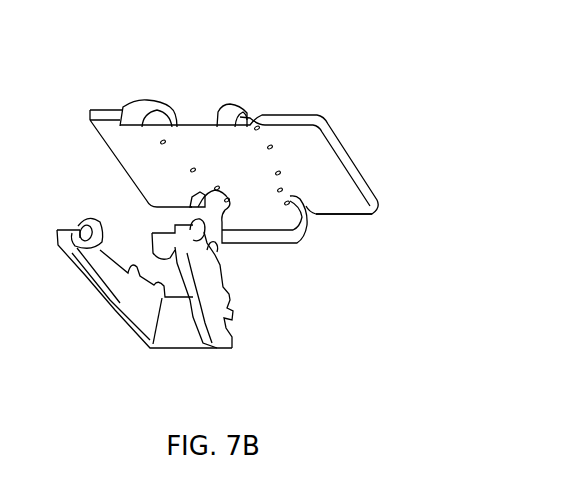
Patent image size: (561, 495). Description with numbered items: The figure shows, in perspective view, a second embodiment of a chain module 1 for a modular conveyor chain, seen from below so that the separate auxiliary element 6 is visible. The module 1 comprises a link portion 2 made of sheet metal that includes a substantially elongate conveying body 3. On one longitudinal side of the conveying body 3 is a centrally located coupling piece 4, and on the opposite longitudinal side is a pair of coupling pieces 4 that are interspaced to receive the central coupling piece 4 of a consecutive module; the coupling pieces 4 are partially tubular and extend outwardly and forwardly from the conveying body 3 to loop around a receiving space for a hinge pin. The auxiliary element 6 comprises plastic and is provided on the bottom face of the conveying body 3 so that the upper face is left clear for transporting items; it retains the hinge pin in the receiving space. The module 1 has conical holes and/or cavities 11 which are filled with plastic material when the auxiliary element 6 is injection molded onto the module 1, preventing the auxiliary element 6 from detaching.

The module 1 is at (317, 78).
The link portion 2 is at (357, 252).
The conveying body 3 is at (327, 183).
The coupling pieces 4 is at (233, 115).
The auxiliary element 6 is at (170, 330).
The holes and/or cavities 11 is at (273, 147).